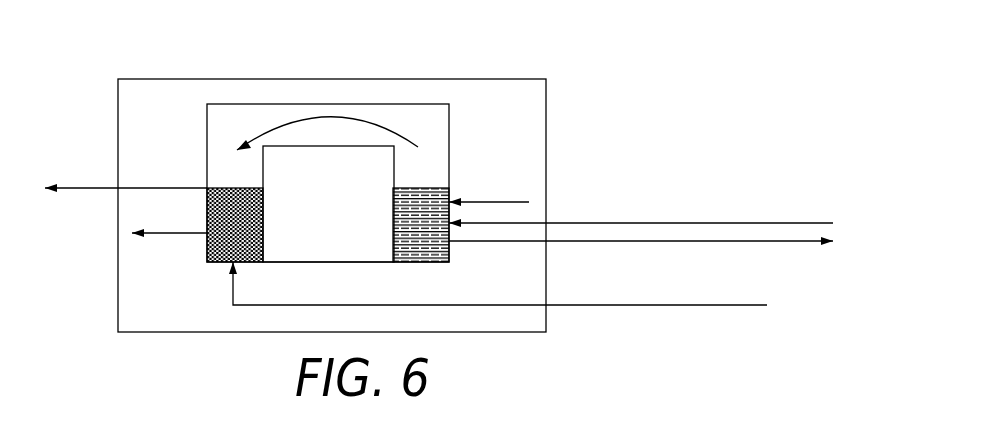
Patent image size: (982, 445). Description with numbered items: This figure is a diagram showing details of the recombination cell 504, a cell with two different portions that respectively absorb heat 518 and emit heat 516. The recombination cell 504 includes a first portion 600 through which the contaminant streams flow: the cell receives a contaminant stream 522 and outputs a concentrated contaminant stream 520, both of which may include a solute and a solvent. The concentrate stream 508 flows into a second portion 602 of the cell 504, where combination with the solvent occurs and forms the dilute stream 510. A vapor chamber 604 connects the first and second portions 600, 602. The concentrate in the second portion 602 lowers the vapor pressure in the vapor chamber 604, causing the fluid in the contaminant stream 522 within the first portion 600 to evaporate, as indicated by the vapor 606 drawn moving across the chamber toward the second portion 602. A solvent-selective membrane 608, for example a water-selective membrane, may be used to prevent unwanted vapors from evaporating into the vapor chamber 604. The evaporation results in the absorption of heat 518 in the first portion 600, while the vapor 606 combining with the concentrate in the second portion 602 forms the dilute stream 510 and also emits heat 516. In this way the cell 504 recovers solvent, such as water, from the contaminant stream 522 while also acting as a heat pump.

The recombination cell 504 is at (479, 79).
The vapor chamber 604 is at (217, 137).
The first portion 600 is at (432, 262).
The vapor 606 is at (400, 132).
The solvent-selective membrane 608 is at (435, 188).
The second portion 602 is at (252, 262).
The dilute stream 510 is at (76, 190).
The emitted heat 516 is at (178, 232).
The absorbed heat 518 is at (515, 201).
The contaminant stream 522 is at (740, 222).
The concentrated contaminant stream 520 is at (817, 250).
The concentrate stream 508 is at (712, 307).